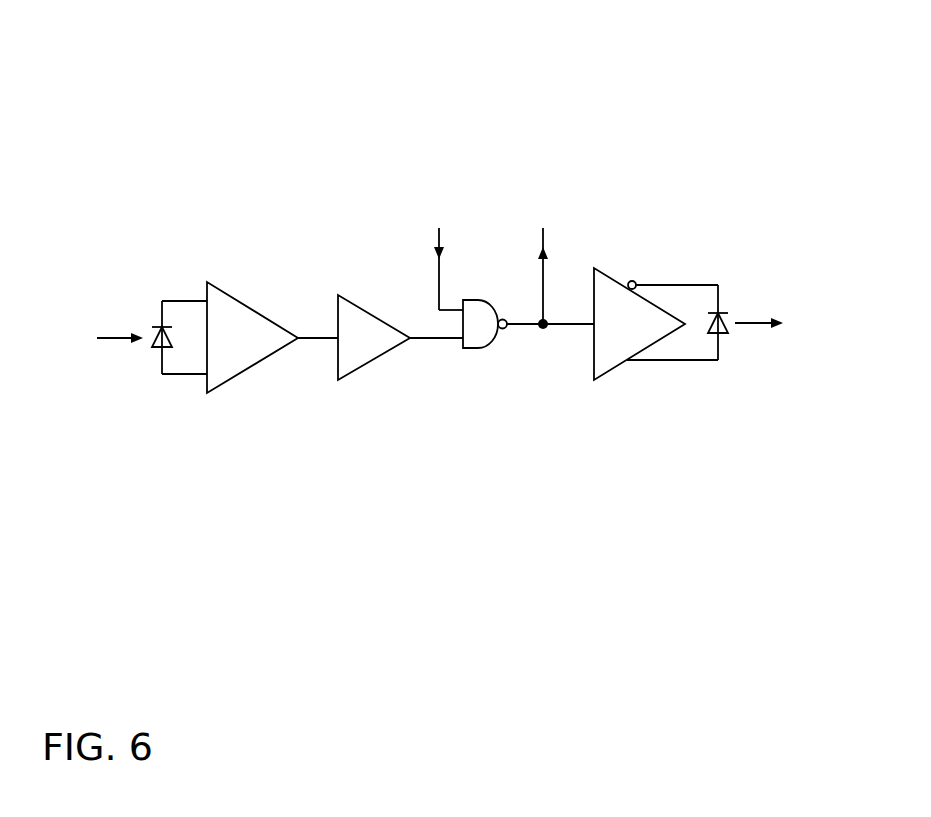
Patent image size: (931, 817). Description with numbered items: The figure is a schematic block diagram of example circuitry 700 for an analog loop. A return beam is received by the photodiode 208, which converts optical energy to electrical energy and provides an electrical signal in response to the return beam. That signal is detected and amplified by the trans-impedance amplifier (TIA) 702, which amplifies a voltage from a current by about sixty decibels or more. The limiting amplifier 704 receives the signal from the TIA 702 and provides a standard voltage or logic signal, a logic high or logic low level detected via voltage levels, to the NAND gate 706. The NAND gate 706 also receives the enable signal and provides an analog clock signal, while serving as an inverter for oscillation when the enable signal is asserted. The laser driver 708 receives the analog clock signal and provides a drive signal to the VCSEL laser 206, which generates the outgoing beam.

The example circuitry for an analog loop 700 is at (740, 48).
The trans-impedance amplifier (TIA) 702 is at (221, 359).
The limiting amplifier 704 is at (350, 348).
The NAND gate 706 is at (482, 336).
The laser driver 708 is at (611, 346).
The photodiode 208 is at (155, 344).
The VCSEL laser 206 is at (723, 330).